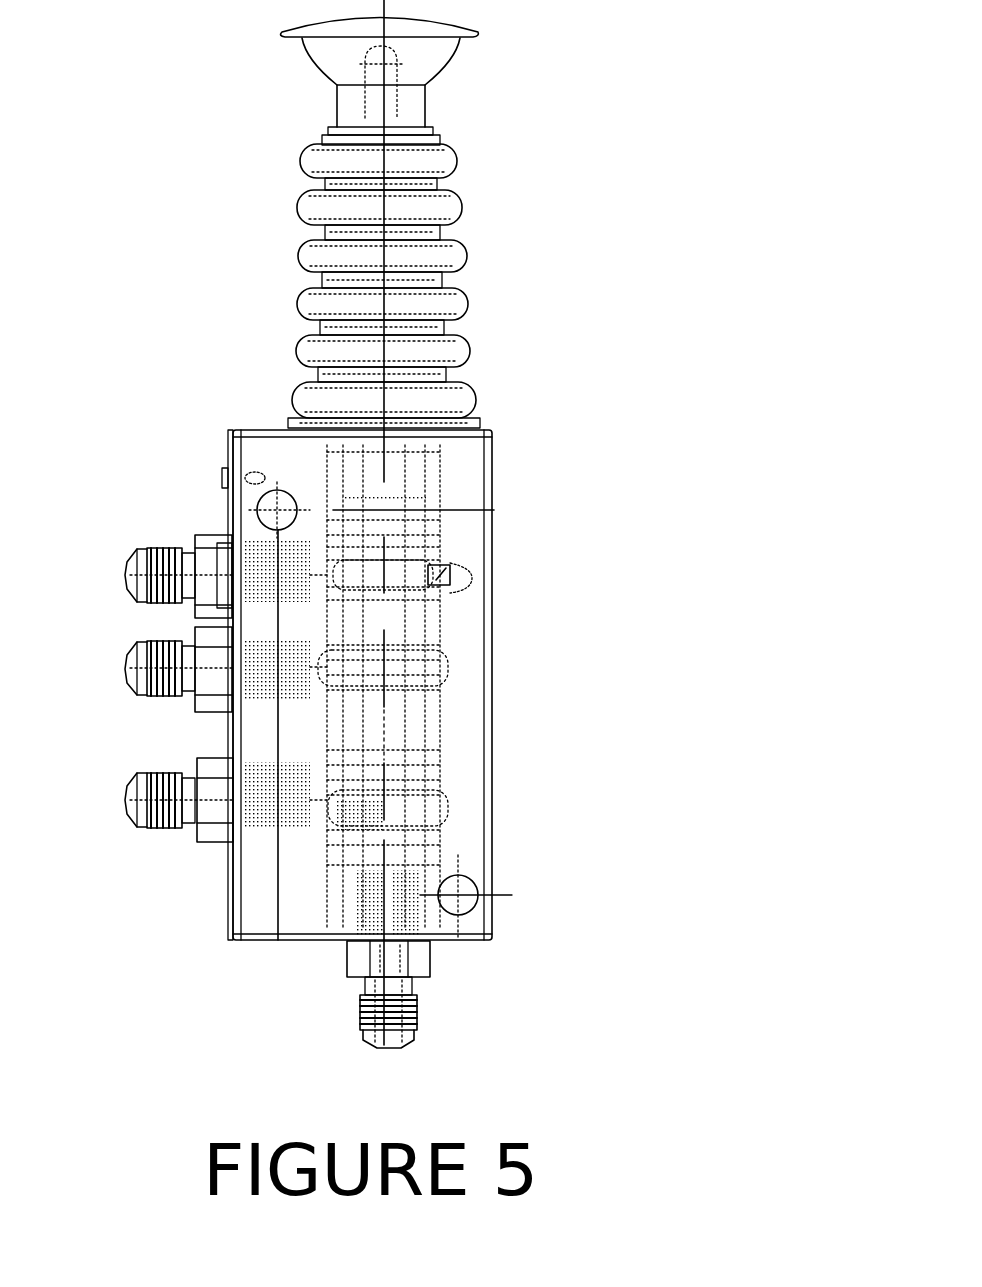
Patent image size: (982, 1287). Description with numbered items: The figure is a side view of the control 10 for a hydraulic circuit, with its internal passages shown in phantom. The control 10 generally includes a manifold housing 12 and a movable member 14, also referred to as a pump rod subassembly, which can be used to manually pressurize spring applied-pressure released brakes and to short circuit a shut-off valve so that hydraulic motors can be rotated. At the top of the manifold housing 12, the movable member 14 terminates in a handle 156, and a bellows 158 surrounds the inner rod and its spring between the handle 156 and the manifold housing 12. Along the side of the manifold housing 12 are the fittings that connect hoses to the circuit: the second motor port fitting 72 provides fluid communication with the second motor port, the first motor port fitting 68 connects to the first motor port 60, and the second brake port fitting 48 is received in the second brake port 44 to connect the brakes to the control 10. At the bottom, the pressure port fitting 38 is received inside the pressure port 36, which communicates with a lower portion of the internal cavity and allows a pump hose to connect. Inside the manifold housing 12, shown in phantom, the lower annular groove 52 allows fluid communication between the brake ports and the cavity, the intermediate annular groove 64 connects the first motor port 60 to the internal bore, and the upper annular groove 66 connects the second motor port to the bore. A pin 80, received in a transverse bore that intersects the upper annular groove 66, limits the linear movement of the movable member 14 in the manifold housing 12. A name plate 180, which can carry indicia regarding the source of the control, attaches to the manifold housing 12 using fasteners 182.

The control 10 is at (754, 184).
The manifold housing 12 is at (467, 738).
The movable member 14 is at (497, 371).
The pressure port 36 is at (360, 950).
The pressure port fitting 38 is at (410, 1033).
The second brake port 44 is at (325, 800).
The second brake port fitting 48 is at (137, 818).
The lower annular groove 52 is at (445, 815).
The first motor port 60 is at (205, 705).
The intermediate annular groove 64 is at (447, 670).
The upper annular groove 66 is at (463, 560).
The first motor port fitting 68 is at (127, 677).
The second motor port fitting 72 is at (138, 568).
The pin 80 is at (208, 578).
The handle 156 is at (413, 73).
The bellows 158 is at (455, 158).
The name plate 180 is at (230, 435).
The fasteners 182 is at (222, 477).